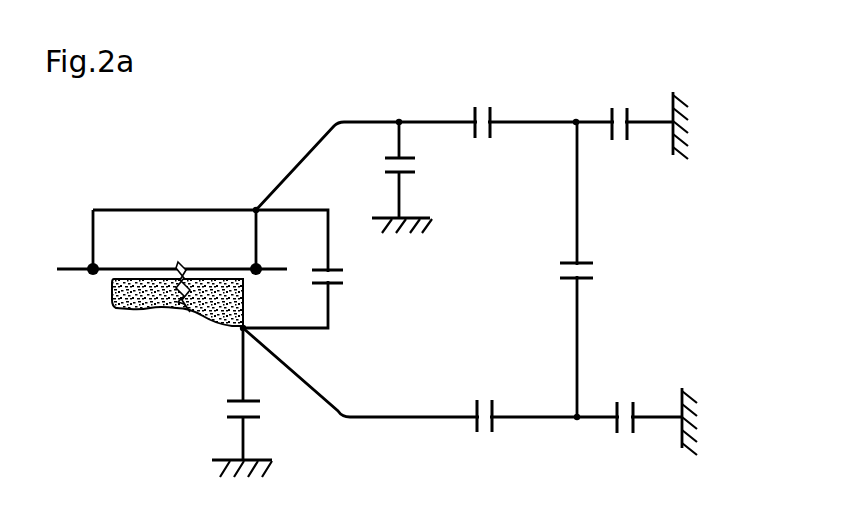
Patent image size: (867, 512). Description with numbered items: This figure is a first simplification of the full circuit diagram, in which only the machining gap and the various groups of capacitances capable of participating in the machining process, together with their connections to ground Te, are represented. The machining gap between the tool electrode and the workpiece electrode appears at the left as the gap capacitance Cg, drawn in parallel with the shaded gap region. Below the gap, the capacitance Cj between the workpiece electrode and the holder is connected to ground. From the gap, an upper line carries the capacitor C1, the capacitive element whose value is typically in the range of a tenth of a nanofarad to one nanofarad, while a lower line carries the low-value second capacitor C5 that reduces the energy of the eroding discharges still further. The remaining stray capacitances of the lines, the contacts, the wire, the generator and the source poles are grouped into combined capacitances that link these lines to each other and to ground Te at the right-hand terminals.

The capacitor C1 is at (482, 106).
The second capacitor C5 is at (485, 433).
The gap capacitance Cg is at (346, 277).
The workpiece-holder capacitance Cj is at (232, 402).
The ground Te is at (682, 128).